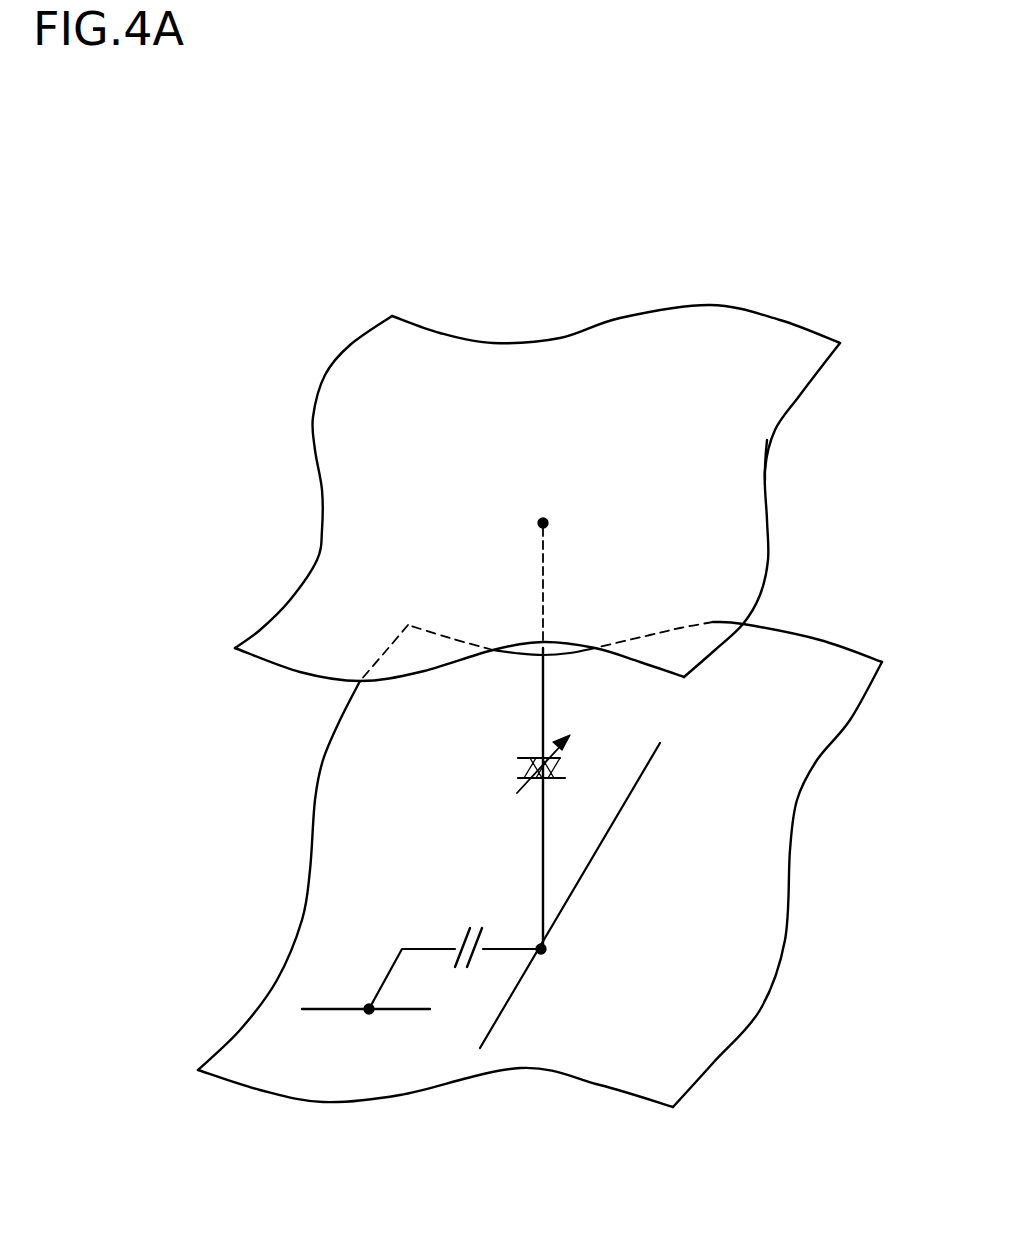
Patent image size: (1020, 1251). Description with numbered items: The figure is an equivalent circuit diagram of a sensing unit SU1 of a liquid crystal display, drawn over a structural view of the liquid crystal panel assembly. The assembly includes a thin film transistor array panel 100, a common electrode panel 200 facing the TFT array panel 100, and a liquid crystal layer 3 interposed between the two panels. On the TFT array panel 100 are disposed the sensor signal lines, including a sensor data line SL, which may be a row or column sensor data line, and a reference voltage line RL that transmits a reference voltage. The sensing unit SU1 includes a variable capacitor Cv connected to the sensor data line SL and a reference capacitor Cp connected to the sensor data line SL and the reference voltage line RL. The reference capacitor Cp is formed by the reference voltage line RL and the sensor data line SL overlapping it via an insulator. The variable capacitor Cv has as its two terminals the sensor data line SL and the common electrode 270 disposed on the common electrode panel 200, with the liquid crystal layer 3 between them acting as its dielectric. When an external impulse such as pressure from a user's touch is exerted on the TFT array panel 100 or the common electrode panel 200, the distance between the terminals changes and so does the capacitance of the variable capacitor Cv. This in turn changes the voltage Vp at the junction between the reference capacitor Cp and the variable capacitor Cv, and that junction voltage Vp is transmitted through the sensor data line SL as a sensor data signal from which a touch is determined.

The liquid crystal layer 3 is at (233, 759).
The thin film transistor array panel 100 is at (792, 842).
The common electrode panel 200 is at (772, 522).
The common electrode 270 is at (765, 465).
The sensing unit SU1 is at (423, 260).
The sensor data line SL is at (582, 879).
The reference voltage line RL is at (360, 994).
The reference capacitor Cp is at (455, 957).
The variable capacitor Cv is at (525, 764).
The junction voltage Vp is at (564, 743).